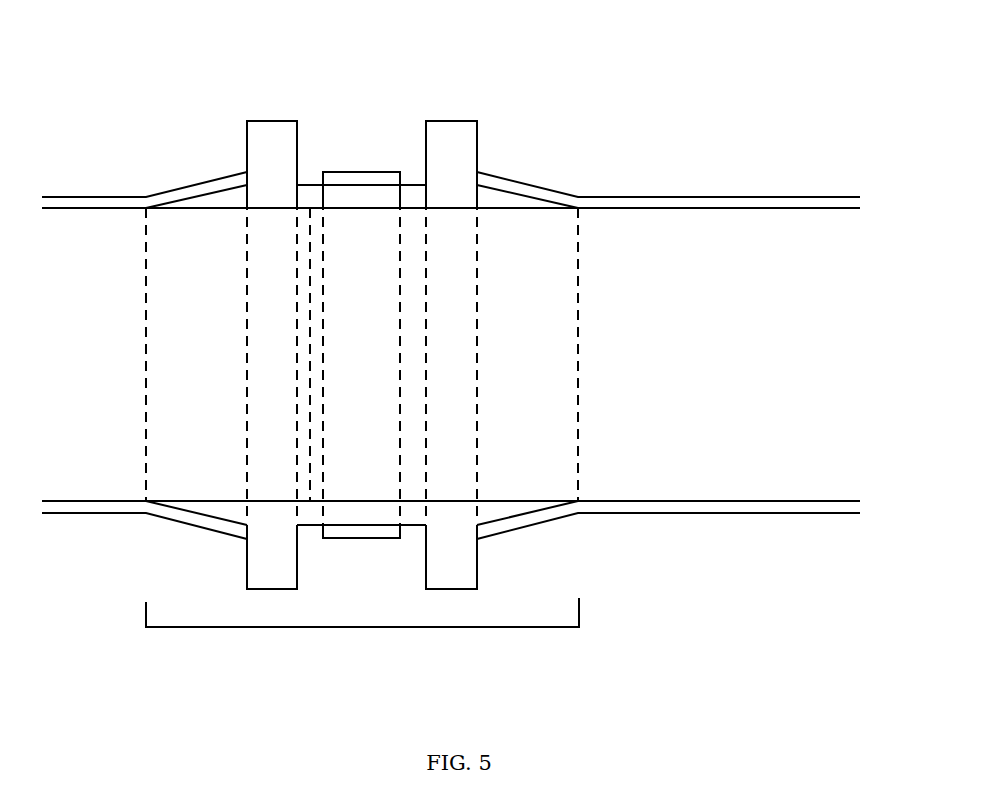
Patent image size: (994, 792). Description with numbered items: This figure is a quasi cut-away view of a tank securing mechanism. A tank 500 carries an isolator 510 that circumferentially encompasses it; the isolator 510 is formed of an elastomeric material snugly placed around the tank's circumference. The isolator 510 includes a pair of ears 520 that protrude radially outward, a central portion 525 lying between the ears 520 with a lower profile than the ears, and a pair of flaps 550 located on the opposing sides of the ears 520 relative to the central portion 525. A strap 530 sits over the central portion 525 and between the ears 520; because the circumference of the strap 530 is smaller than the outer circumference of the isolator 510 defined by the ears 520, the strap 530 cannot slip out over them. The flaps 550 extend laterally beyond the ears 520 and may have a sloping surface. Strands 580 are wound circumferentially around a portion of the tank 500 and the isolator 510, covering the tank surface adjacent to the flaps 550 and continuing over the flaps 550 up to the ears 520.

The tank 500 is at (451, 359).
The isolator 510 is at (362, 627).
The pair of ears 520 is at (272, 132).
The central portion 525 is at (310, 208).
The strap 530 is at (362, 178).
The pair of flaps 550 is at (205, 202).
The strands 580 is at (220, 181).